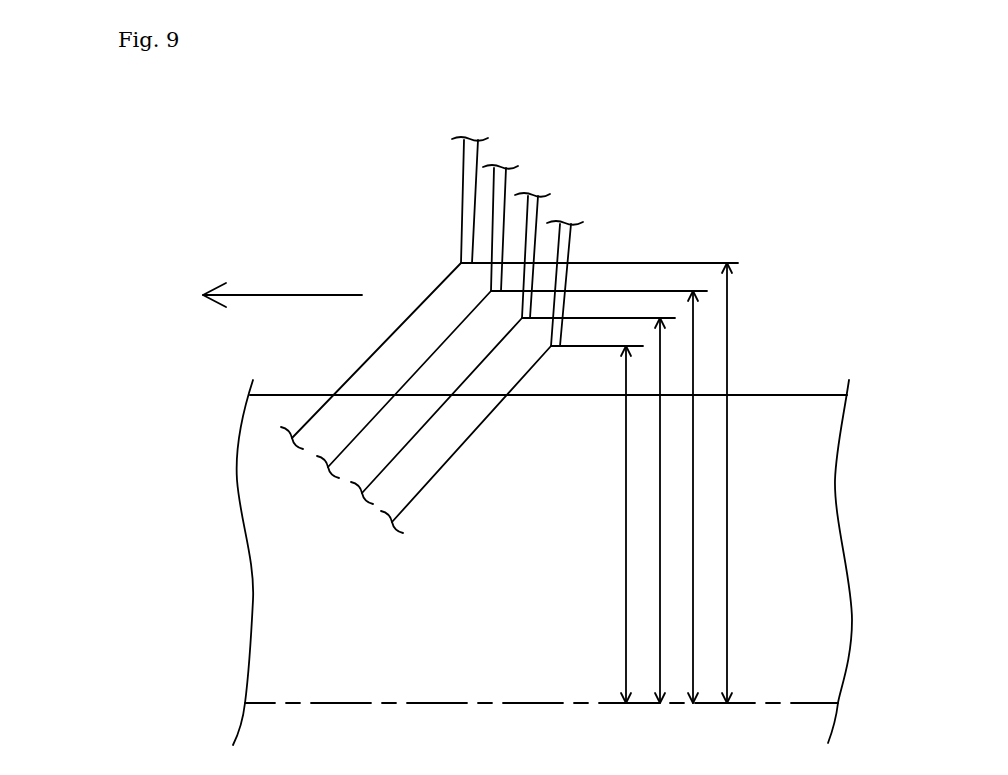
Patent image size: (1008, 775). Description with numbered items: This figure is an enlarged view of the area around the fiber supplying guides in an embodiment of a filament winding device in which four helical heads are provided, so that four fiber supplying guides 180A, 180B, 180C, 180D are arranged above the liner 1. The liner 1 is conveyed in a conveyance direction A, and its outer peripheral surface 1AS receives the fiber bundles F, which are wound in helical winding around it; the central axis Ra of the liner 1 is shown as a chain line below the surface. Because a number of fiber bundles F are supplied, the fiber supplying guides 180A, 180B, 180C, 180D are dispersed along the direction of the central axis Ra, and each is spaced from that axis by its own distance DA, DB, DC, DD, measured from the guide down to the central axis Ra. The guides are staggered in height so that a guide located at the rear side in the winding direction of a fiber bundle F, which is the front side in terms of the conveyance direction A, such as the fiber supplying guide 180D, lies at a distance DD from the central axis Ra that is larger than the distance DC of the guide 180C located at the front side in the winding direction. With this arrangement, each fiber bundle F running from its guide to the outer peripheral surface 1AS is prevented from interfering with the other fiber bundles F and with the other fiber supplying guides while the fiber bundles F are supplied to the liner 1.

The liner 1 is at (797, 352).
The outer peripheral surface 1AS is at (770, 394).
The central axis Ra is at (391, 702).
The conveyance direction A is at (282, 288).
The fiber bundle F is at (377, 413).
The fiber supplying guide 180A is at (566, 222).
The fiber supplying guide 180B is at (537, 194).
The fiber supplying guide 180C is at (503, 166).
The fiber supplying guide 180D is at (472, 138).
The distance DA is at (597, 524).
The distance DB is at (598, 510).
The distance DC is at (599, 497).
The distance DD is at (599, 483).